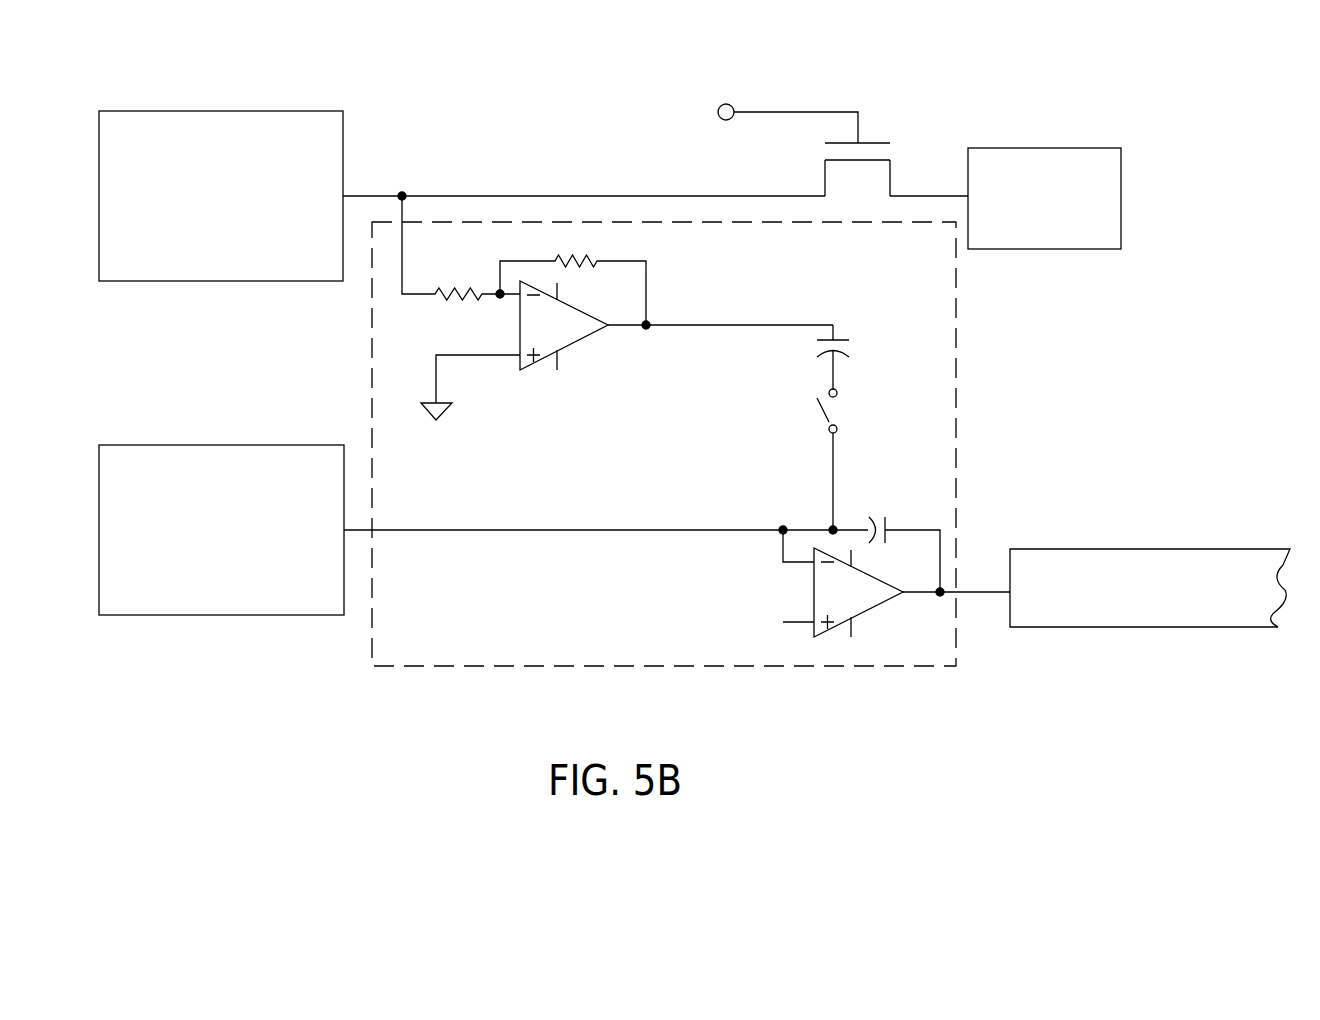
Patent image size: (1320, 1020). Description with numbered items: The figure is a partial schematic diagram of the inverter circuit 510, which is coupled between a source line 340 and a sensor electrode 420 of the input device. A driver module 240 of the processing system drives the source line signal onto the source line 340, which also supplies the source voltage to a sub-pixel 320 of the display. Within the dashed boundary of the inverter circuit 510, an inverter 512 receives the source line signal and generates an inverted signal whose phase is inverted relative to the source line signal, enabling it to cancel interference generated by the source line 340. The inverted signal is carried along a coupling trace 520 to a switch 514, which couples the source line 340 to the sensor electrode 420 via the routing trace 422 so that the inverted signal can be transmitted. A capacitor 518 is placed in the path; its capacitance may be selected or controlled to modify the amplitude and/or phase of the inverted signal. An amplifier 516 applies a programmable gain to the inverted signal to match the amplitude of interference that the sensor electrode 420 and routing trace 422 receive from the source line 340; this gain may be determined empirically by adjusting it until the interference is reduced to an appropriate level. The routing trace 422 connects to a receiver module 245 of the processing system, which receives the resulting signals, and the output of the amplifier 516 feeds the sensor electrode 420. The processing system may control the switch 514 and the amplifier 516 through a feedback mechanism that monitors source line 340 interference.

The driver module 240 is at (200, 227).
The receiver module 245 is at (201, 562).
The sub-pixel 320 is at (1024, 208).
The source line 340 is at (451, 190).
The sensor electrode 420 is at (1140, 628).
The routing trace 422 is at (521, 535).
The inverter circuit 510 is at (957, 360).
The inverter 512 is at (600, 355).
The switch 514 is at (805, 418).
The amplifier 516 is at (785, 589).
The capacitor 518 is at (865, 353).
The coupling trace 520 is at (731, 323).